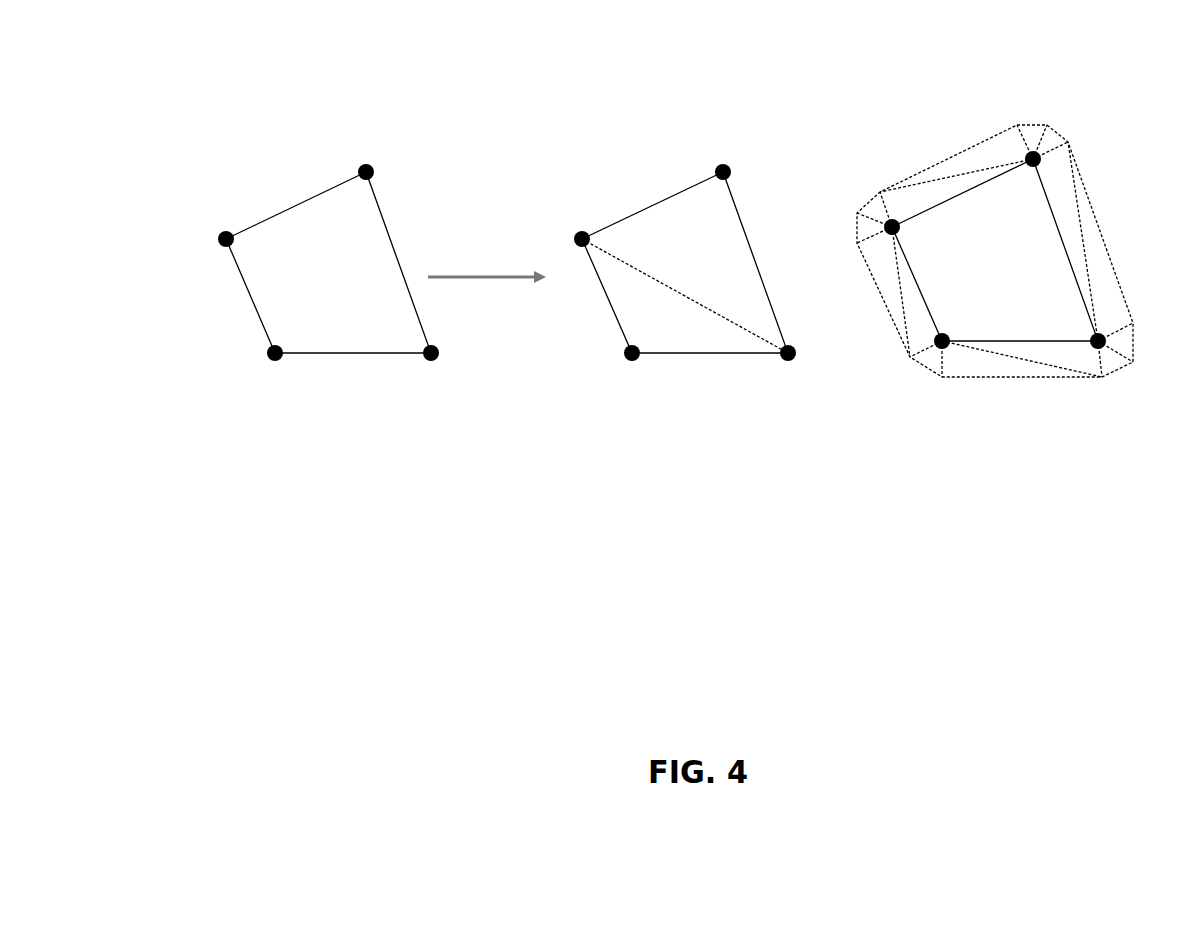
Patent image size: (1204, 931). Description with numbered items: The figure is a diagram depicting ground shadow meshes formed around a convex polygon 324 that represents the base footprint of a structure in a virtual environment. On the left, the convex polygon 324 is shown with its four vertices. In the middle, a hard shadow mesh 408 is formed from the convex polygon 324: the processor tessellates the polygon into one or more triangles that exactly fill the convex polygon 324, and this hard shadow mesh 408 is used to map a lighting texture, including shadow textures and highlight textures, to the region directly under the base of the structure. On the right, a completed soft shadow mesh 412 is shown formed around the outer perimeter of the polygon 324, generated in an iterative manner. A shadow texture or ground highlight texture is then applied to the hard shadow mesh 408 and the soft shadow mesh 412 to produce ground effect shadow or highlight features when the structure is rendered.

The convex polygon 324 is at (317, 353).
The hard shadow mesh 408 is at (656, 156).
The soft shadow mesh 412 is at (946, 116).